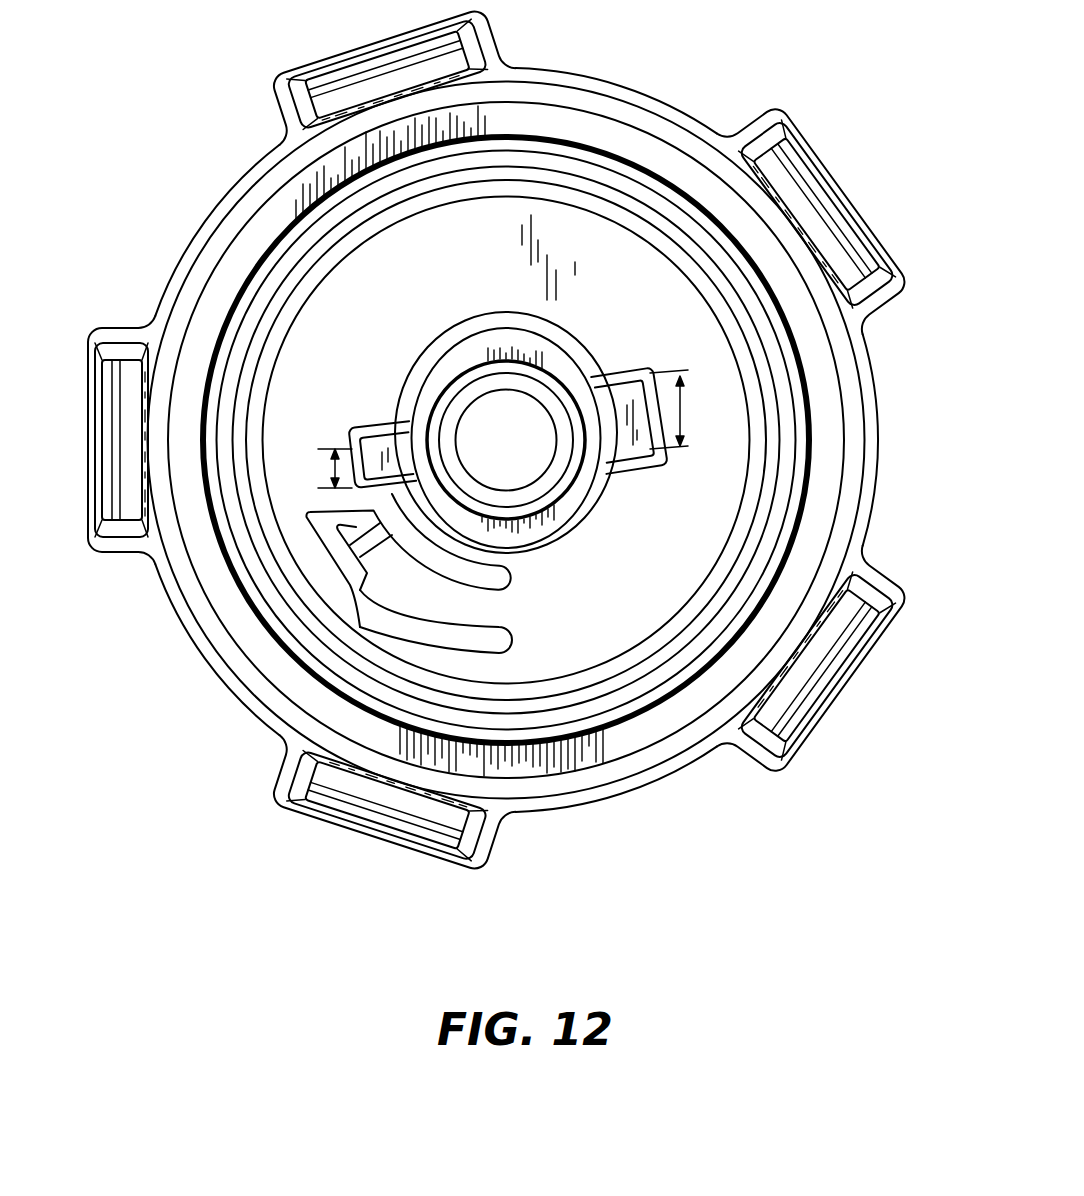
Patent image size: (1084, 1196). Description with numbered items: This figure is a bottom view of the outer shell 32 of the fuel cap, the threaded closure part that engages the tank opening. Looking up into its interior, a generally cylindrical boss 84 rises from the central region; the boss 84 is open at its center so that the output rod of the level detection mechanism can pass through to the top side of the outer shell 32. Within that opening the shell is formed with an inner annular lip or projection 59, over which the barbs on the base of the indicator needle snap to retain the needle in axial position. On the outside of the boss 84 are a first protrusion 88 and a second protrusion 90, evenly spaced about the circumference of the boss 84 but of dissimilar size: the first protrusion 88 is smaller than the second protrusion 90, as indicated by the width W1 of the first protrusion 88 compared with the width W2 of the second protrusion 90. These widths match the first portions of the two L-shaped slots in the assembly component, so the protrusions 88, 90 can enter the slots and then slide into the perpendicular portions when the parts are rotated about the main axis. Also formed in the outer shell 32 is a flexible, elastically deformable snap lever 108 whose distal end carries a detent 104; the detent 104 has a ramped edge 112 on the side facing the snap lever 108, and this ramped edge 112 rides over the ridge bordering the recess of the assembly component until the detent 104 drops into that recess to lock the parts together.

The outer shell 32 is at (177, 143).
The inner annular lip or projection 59 is at (540, 392).
The boss 84 is at (565, 510).
The first protrusion 88 is at (378, 428).
The second protrusion 90 is at (625, 368).
The detent 104 is at (335, 522).
The snap lever 108 is at (377, 552).
The ramped edge 112 is at (388, 580).
The width of the first protrusion W1 is at (332, 468).
The width of the second protrusion W2 is at (683, 432).